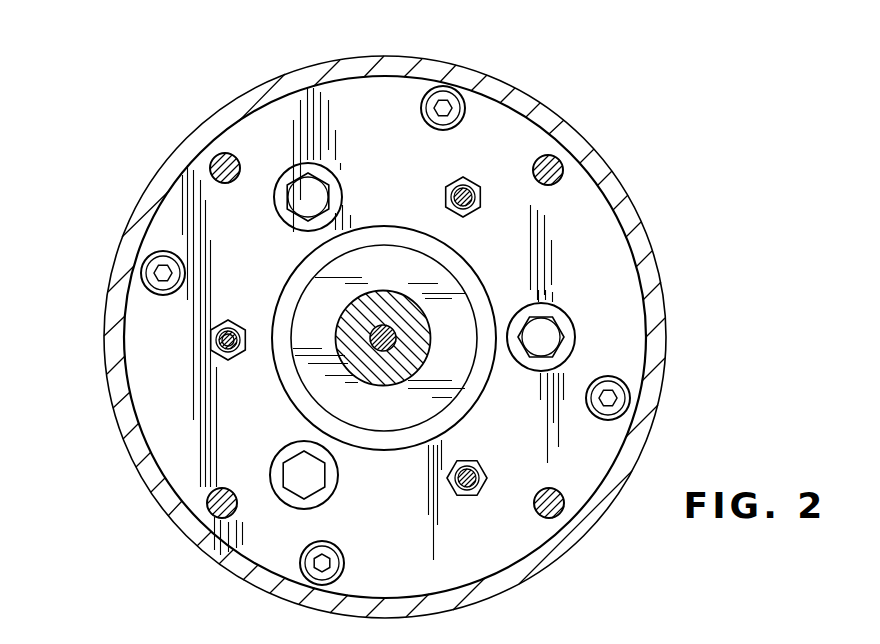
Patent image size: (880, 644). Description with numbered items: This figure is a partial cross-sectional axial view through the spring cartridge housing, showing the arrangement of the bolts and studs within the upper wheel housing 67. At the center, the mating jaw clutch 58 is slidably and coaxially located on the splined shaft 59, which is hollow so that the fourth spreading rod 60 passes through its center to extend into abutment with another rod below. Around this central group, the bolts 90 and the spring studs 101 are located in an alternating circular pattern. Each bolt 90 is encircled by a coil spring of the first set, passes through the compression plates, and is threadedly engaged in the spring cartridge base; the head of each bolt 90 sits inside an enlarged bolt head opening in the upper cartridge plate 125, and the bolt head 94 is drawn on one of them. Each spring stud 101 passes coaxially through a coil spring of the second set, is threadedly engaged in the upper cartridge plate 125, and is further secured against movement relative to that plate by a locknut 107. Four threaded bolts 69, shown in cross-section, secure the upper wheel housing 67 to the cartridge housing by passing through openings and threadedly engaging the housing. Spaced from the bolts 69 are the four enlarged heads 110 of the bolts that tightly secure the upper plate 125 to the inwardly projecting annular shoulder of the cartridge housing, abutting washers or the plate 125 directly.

The mating jaw clutch 58 is at (368, 274).
The splined shaft 59 is at (403, 297).
The fourth spreading rod 60 is at (375, 335).
The upper wheel housing 67 is at (553, 113).
The threaded bolts 69 is at (218, 156).
The bolts 90 is at (303, 197).
The screw head 94 is at (318, 176).
The spring stud 101 is at (473, 184).
The locknut 107 is at (220, 354).
The enlarged heads 110 is at (445, 102).
The upper cartridge plate 125 is at (341, 135).